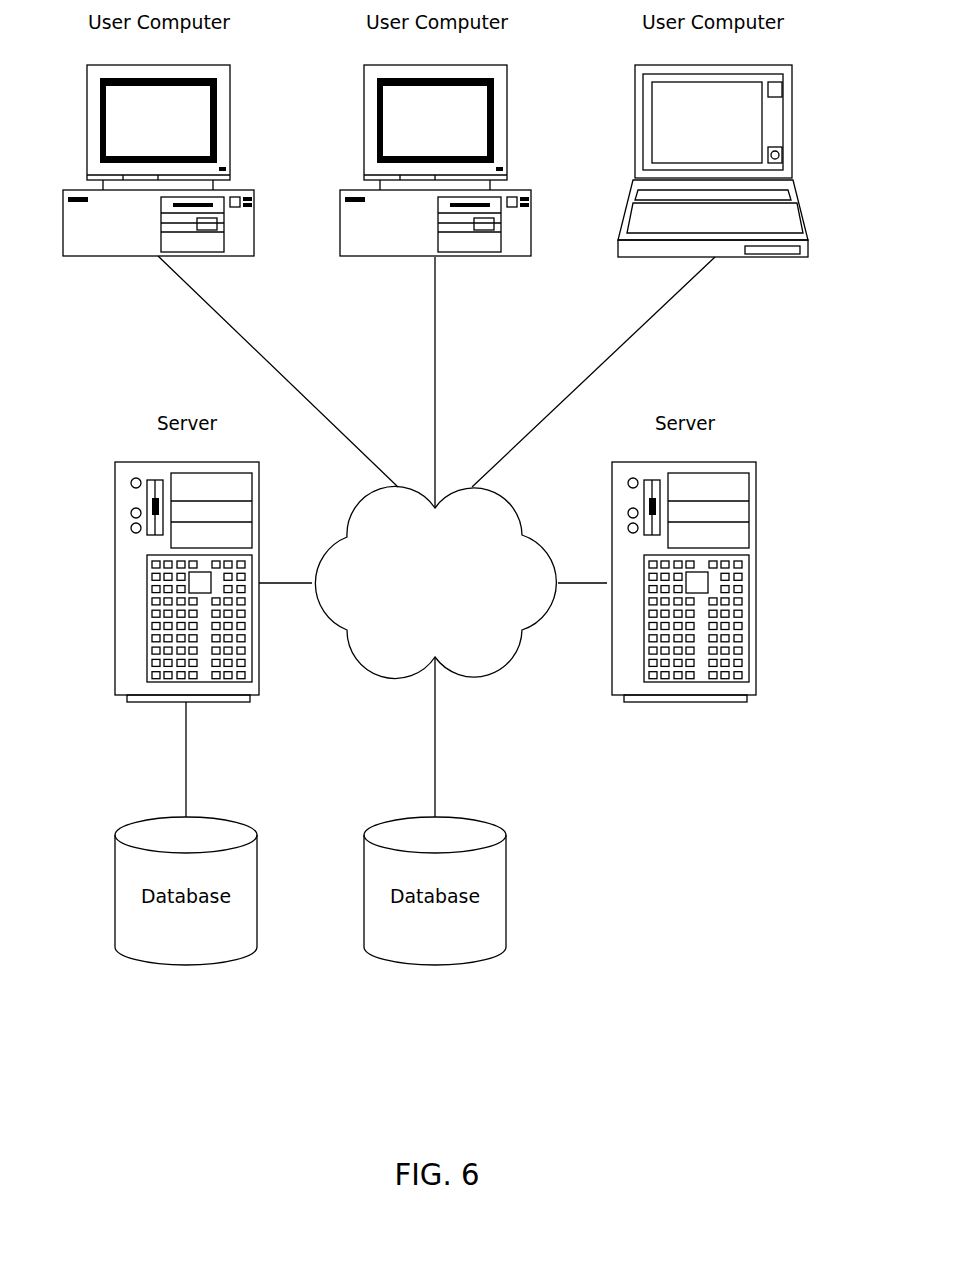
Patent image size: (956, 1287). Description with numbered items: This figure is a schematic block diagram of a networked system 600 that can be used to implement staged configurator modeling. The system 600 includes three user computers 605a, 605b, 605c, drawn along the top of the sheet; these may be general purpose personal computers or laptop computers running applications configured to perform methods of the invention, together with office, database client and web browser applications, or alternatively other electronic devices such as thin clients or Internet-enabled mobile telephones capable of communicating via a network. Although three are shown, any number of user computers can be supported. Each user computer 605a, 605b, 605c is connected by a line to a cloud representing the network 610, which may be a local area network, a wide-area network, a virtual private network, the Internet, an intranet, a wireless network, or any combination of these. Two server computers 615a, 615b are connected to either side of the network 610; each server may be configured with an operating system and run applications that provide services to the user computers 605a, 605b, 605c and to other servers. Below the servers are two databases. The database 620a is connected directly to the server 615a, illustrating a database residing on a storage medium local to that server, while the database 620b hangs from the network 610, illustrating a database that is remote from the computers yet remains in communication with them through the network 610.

The system 600 is at (675, 1017).
The user computer 605a is at (254, 210).
The user computer 605b is at (340, 210).
The user computer 605c is at (635, 162).
The network 610 is at (468, 680).
The server 615a is at (115, 582).
The server 615b is at (755, 583).
The database 620a is at (186, 965).
The database 620b is at (435, 965).